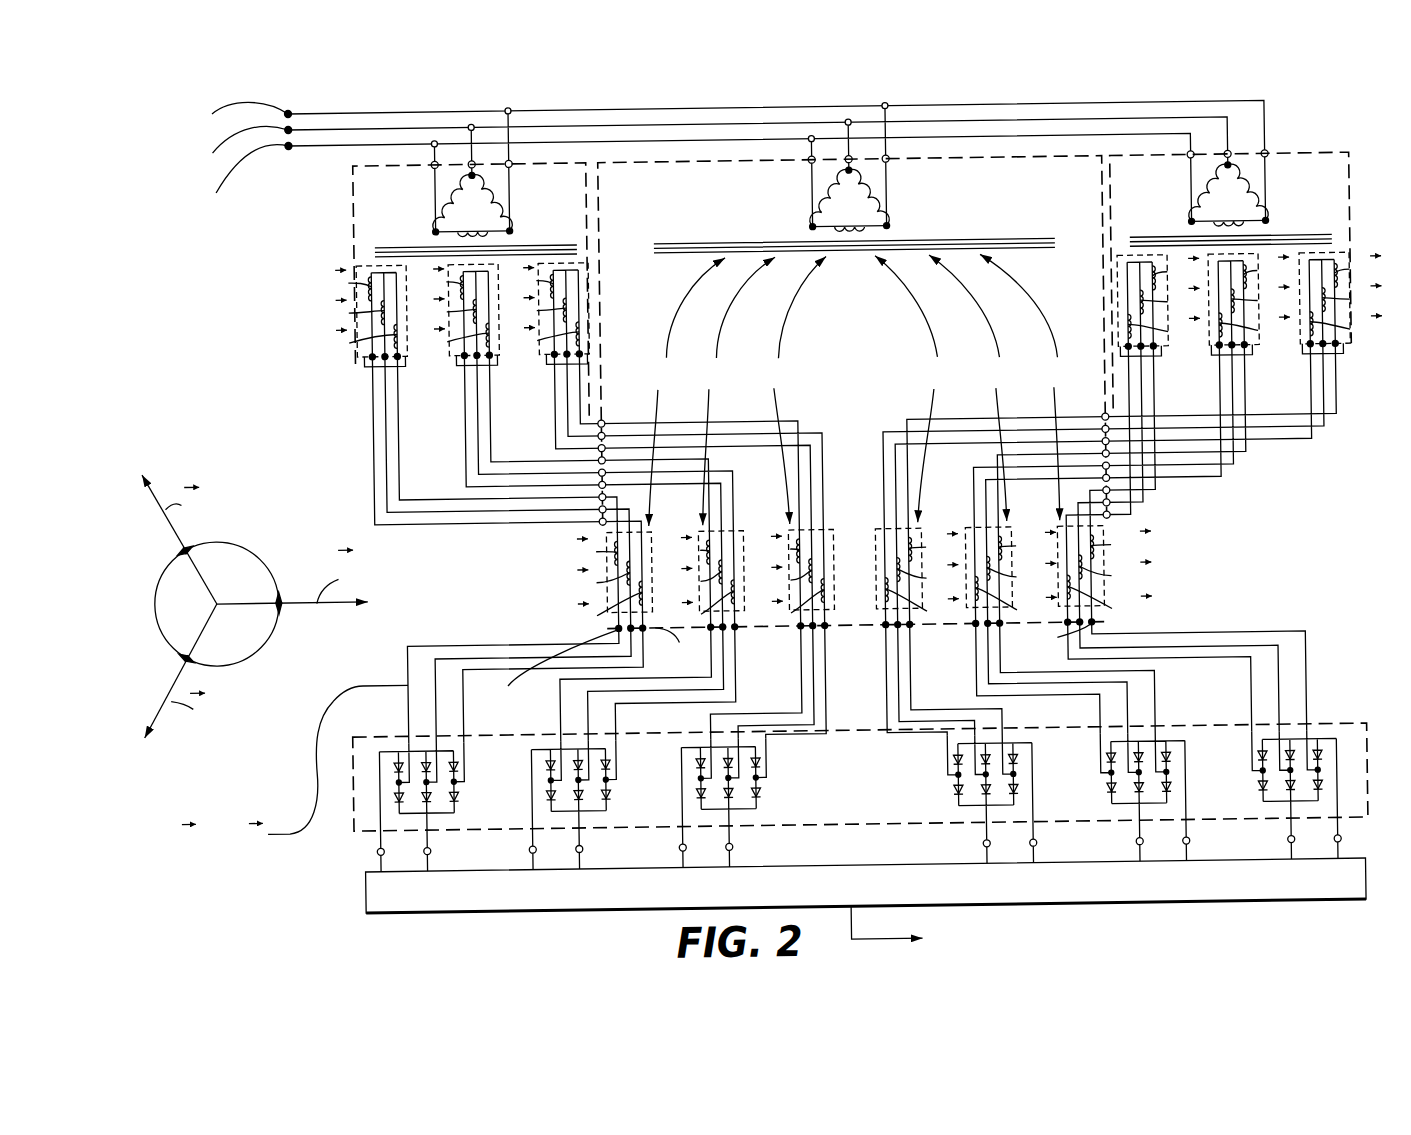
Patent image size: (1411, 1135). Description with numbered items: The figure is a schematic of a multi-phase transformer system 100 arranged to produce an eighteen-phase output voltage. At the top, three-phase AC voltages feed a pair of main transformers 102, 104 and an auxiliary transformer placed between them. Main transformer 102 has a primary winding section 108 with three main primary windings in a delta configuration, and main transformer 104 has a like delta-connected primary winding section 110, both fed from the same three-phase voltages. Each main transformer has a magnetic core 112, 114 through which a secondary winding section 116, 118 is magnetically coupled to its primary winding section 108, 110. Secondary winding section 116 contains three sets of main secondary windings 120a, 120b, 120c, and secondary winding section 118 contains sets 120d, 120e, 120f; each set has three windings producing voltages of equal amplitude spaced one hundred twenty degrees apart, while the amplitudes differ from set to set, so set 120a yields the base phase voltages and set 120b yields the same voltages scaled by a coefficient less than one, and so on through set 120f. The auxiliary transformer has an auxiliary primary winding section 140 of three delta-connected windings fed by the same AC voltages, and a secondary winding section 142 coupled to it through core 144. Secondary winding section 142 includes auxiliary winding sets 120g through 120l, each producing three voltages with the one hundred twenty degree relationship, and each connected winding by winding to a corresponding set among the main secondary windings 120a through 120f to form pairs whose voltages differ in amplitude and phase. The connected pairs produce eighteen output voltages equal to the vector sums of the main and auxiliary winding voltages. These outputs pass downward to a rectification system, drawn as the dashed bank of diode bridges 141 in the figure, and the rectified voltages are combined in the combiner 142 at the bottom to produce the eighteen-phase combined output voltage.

The multi-phase transformer system 100 is at (763, 523).
The main transformer 102 is at (352, 218).
The main transformer 104 is at (1349, 221).
The primary winding section 108 is at (488, 225).
The primary winding section 110 is at (1244, 225).
The magnetic core 112 is at (412, 246).
The magnetic core 114 is at (1168, 246).
The secondary winding section 116 is at (365, 264).
The secondary winding section 118 is at (1336, 264).
The set of main secondary windings 120a is at (361, 368).
The set of main secondary windings 120b is at (452, 368).
The set of main secondary windings 120c is at (543, 368).
The set of main secondary windings 120d is at (1166, 368).
The set of main secondary windings 120e is at (1256, 368).
The set of main secondary windings 120f is at (1347, 368).
The auxiliary winding set 120g is at (598, 620).
The auxiliary winding set 120l is at (1098, 622).
The auxiliary primary winding section 140 is at (865, 225).
The rectifier bank of diode bridges 141 is at (1360, 783).
The secondary winding section 142 is at (1359, 893).
The core 144 is at (791, 246).